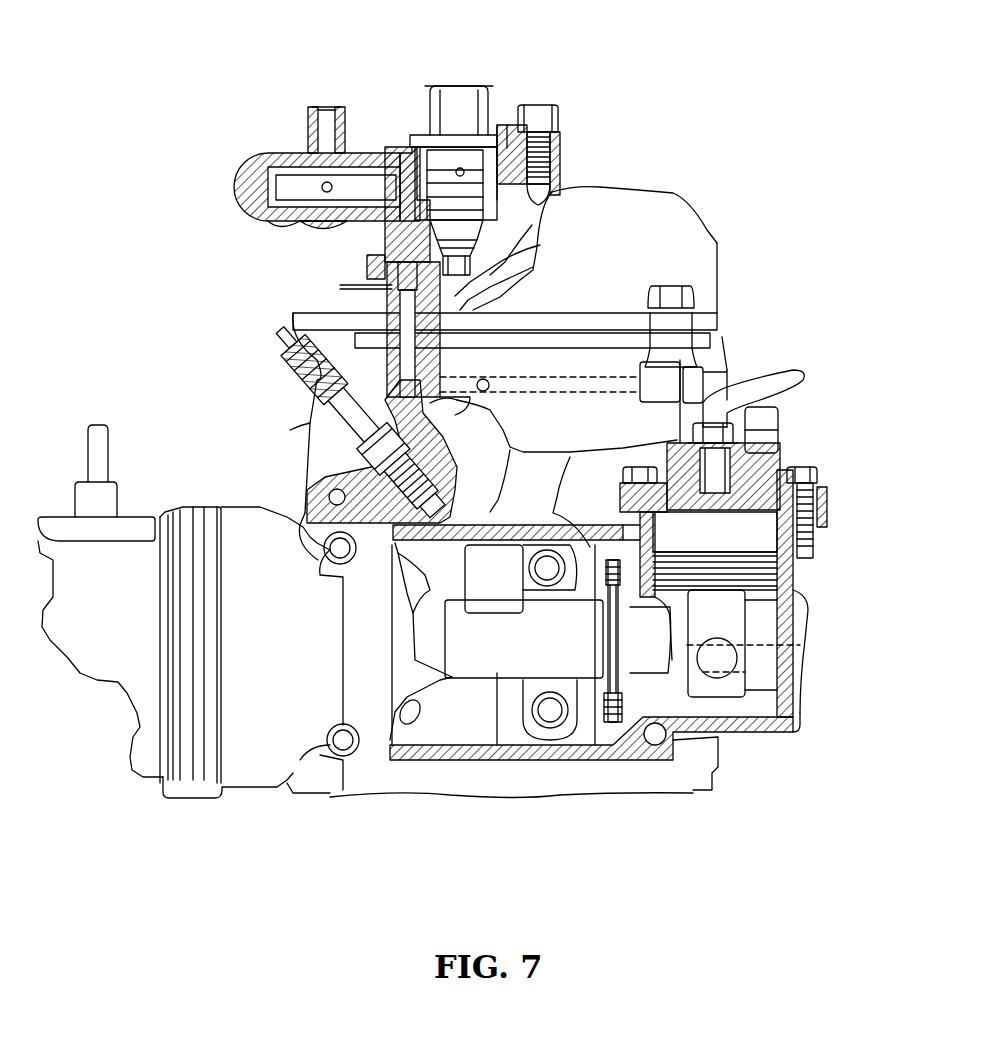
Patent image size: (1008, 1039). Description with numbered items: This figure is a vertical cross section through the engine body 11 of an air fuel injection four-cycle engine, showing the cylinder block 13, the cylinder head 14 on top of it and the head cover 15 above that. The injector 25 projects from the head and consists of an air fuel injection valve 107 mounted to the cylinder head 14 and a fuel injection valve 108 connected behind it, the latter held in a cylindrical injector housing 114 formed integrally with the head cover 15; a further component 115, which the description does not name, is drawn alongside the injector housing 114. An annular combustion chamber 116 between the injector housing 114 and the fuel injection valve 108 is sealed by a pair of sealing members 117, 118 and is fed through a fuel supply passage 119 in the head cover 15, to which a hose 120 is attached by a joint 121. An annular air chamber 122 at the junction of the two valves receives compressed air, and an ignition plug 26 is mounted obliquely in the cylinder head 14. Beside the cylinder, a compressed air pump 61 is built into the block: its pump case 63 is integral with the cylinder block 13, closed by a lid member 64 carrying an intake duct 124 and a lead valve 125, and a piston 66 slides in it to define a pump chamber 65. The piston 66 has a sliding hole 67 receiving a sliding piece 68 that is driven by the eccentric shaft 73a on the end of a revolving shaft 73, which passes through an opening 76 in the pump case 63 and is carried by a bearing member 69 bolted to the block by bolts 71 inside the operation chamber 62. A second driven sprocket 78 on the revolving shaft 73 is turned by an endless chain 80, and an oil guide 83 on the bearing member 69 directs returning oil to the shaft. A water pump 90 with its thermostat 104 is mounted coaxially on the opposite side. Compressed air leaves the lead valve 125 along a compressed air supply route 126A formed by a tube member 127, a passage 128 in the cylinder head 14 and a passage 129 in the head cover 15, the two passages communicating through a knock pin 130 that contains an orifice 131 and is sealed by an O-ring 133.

The engine body 11 is at (726, 740).
The cylinder block 13 is at (597, 781).
The cylinder head 14 is at (320, 421).
The head cover 15 is at (713, 241).
The injector 25 is at (465, 79).
The ignition plug 26 is at (281, 331).
The compressed air pump 61 is at (792, 662).
The operation chamber 62 is at (453, 734).
The pump case 63 is at (788, 624).
The lid member 64 is at (783, 468).
The pump chamber 65 is at (824, 528).
The piston 66 is at (777, 571).
The sliding hole 67 is at (763, 722).
The sliding piece 68 is at (710, 654).
The bearing member 69 is at (497, 745).
The bolts 71 is at (545, 547).
The revolving shaft 73 is at (665, 663).
The eccentric shaft 73a is at (747, 644).
The opening 76 is at (668, 703).
The second driven sprocket 78 is at (610, 662).
The endless chain 80 is at (613, 724).
The oil guide 83 is at (492, 560).
The water pump 90 is at (230, 502).
The thermostat 104 is at (97, 679).
The air fuel injection valve 107 is at (467, 318).
The fuel injection valve 108 is at (552, 192).
The injector housing 114 is at (540, 245).
The clamp bolt 115 is at (557, 132).
The annular combustion chamber 116 is at (437, 172).
The sealing member 117 is at (498, 160).
The sealing member 118 is at (532, 225).
The fuel supply passage 119 is at (395, 176).
The hose 120 is at (308, 124).
The joint 121 is at (302, 224).
The annular air chamber 122 is at (533, 267).
The intake duct 124 is at (760, 418).
The lead valve 125 is at (814, 491).
The compressed air supply route 126A is at (729, 371).
The tube member 127 is at (790, 381).
The passage 128 is at (443, 361).
The passage 129 is at (387, 254).
The knock pin 130 is at (377, 284).
The orifice 131 is at (323, 401).
The O-ring 133 is at (387, 308).